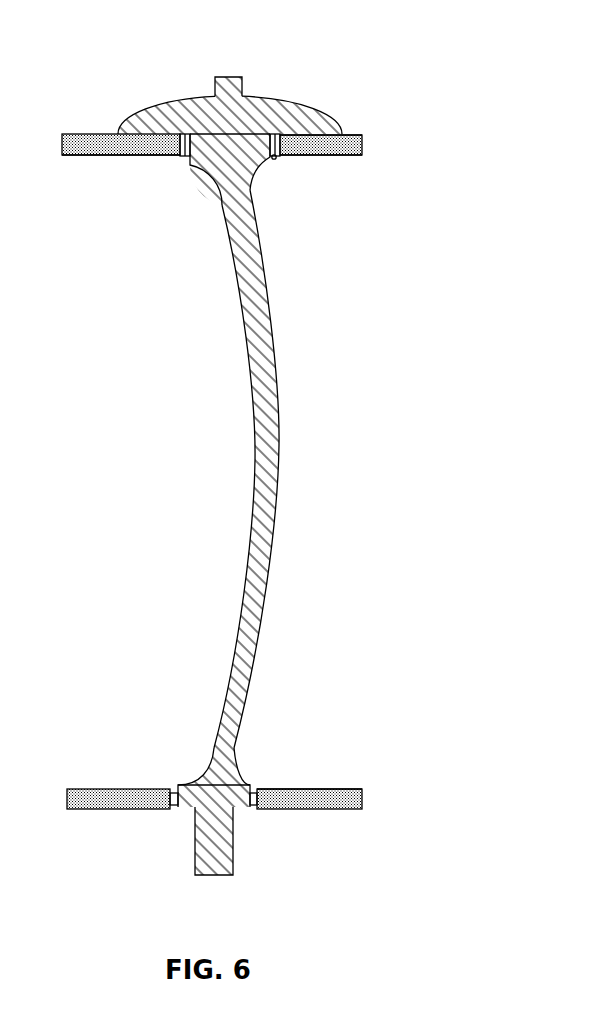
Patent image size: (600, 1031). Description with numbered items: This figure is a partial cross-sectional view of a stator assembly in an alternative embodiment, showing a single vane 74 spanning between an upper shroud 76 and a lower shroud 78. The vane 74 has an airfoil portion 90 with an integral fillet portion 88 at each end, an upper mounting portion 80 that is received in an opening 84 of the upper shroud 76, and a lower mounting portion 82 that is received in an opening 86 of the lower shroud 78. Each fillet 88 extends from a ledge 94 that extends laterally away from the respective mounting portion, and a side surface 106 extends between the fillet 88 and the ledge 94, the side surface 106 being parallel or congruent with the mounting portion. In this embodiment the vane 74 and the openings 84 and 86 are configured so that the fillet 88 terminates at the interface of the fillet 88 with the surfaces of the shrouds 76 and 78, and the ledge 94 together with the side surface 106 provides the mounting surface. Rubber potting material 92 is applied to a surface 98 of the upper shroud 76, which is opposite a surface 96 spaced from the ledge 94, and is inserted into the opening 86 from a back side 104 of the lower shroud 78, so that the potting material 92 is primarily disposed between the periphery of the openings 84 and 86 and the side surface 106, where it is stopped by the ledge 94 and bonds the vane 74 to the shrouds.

The vane 74 is at (338, 435).
The upper shroud 76 is at (362, 152).
The lower shroud 78 is at (350, 789).
The upper mounting portion 80 is at (222, 77).
The lower mounting portion 82 is at (215, 875).
The opening 84 is at (277, 134).
The opening 86 is at (176, 800).
The integral fillet portion 88 is at (195, 170).
The airfoil portion 90 is at (276, 520).
The rubber potting material 92 is at (170, 101).
The ledge 94 is at (200, 133).
The surface 96 is at (85, 156).
The surface 98 is at (352, 135).
The back side 104 is at (360, 810).
The side surface 106 is at (148, 132).